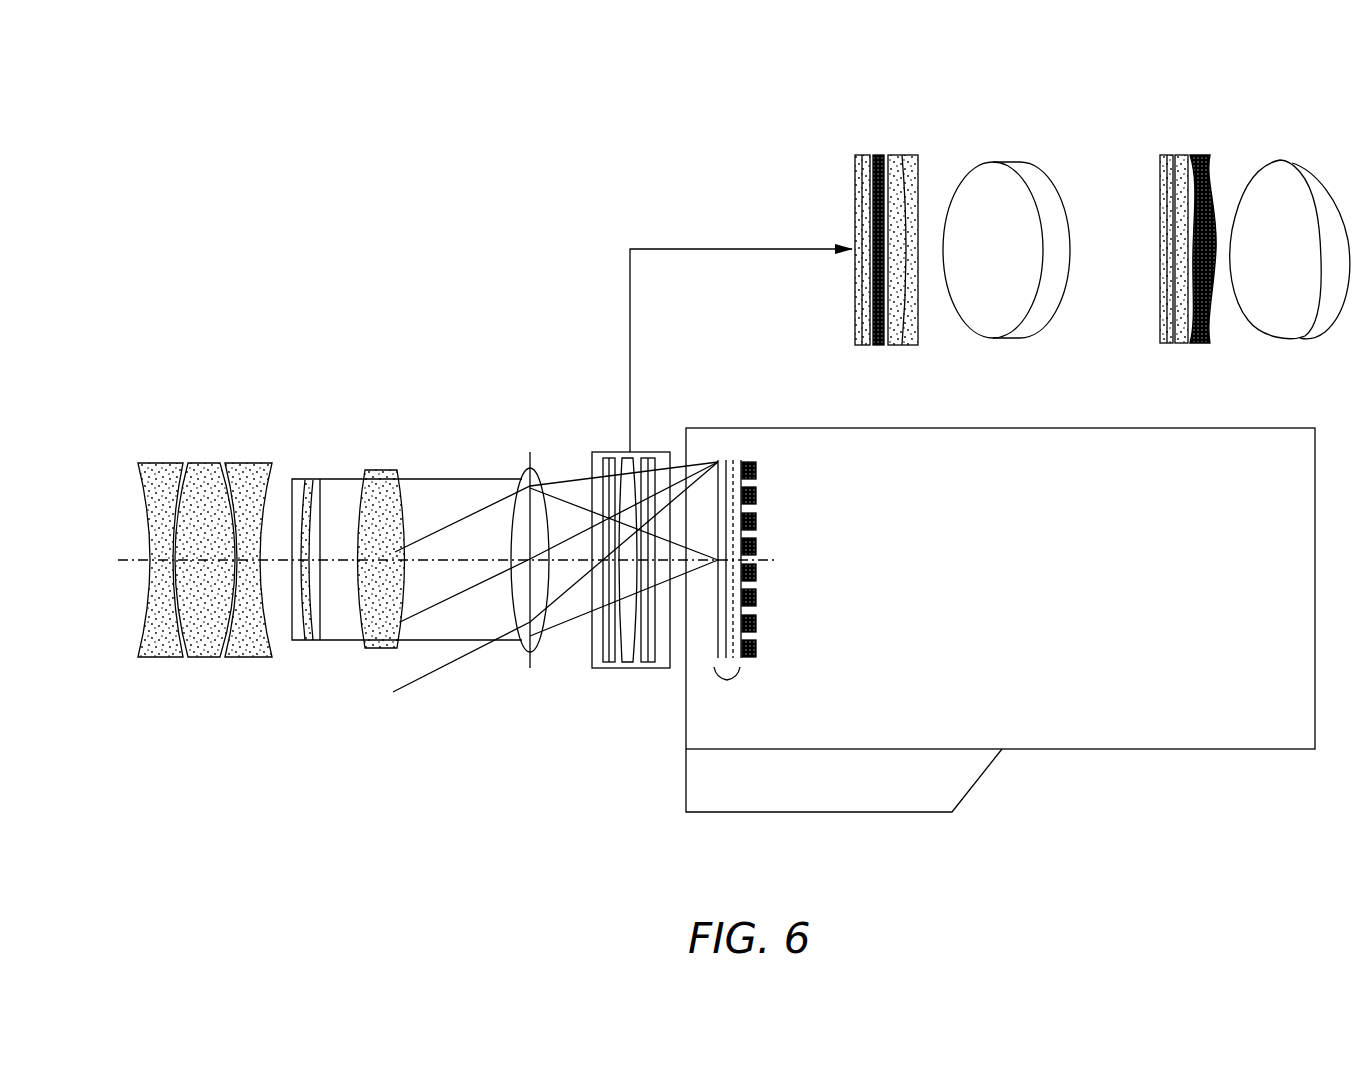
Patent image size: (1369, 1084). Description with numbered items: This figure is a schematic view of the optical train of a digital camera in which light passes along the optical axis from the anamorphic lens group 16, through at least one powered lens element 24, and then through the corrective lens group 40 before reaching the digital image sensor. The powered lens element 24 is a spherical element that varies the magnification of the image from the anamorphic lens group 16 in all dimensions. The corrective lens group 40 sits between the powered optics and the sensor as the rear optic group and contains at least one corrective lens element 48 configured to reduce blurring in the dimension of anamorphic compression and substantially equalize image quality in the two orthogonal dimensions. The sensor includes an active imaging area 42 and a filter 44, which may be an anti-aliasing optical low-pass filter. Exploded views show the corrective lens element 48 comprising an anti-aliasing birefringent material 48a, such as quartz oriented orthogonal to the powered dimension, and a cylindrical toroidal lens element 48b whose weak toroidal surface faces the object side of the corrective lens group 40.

The anamorphic lens group 16 is at (280, 428).
The powered lens element 24 is at (540, 462).
The corrective lens group 40 is at (633, 688).
The active imaging area 42 is at (742, 463).
The filter 44 is at (727, 680).
The corrective lens element 48 is at (612, 455).
The birefringent material 48a is at (878, 152).
The toroidal lens element 48b is at (1198, 152).